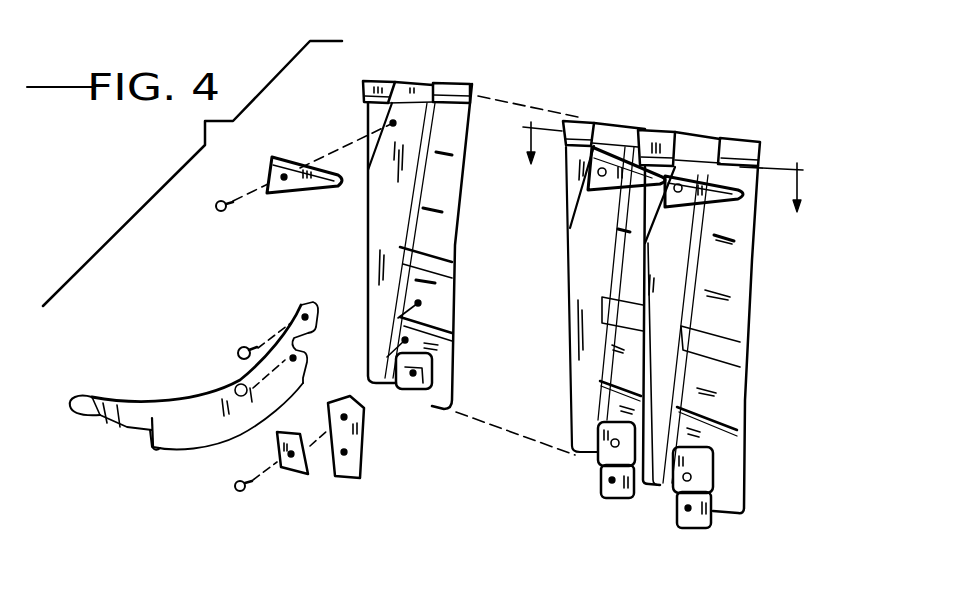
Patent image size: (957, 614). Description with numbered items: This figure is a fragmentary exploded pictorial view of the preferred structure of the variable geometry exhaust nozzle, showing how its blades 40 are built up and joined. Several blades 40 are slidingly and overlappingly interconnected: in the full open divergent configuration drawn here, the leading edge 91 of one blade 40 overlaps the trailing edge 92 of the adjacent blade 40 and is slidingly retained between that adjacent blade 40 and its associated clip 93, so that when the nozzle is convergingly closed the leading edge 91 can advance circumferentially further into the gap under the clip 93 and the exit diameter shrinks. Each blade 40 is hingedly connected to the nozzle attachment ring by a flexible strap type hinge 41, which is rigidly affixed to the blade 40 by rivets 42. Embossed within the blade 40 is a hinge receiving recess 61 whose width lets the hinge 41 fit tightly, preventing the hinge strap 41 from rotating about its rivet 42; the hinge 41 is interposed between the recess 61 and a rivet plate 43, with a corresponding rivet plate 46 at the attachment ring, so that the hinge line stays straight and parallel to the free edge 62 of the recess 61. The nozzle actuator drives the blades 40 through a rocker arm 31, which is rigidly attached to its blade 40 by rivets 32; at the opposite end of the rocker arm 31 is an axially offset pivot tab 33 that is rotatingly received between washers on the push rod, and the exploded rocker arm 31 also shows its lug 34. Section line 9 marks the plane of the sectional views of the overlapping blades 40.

The section line 9- 9 is at (666, 171).
The rocker arm 31 is at (203, 441).
The rivets 32 is at (243, 346).
The pivot tab 33 is at (83, 392).
The lug 34 is at (151, 450).
The blade 40 is at (459, 80).
The flexible strap type hinge 41 is at (342, 476).
The rivets 42 is at (234, 490).
The rivet plate 43 is at (287, 478).
The rivet plate 46 is at (384, 80).
The hinge receiving recess 61 is at (420, 393).
The free edge 62 is at (408, 392).
The leading edge 91 is at (362, 88).
The trailing edge 92 is at (474, 106).
The clip 93 is at (318, 193).